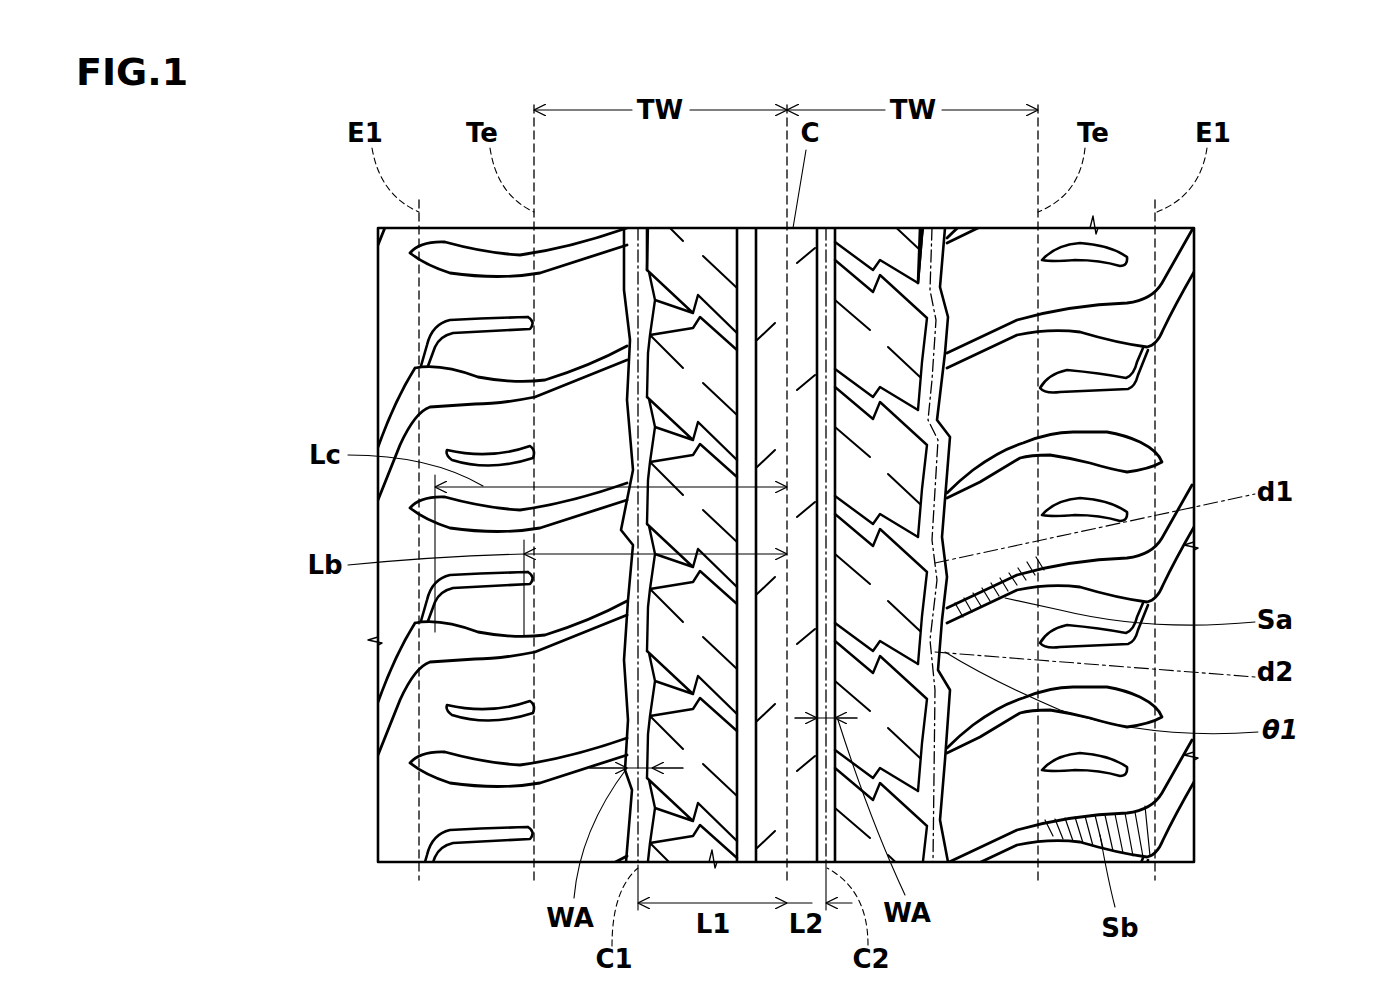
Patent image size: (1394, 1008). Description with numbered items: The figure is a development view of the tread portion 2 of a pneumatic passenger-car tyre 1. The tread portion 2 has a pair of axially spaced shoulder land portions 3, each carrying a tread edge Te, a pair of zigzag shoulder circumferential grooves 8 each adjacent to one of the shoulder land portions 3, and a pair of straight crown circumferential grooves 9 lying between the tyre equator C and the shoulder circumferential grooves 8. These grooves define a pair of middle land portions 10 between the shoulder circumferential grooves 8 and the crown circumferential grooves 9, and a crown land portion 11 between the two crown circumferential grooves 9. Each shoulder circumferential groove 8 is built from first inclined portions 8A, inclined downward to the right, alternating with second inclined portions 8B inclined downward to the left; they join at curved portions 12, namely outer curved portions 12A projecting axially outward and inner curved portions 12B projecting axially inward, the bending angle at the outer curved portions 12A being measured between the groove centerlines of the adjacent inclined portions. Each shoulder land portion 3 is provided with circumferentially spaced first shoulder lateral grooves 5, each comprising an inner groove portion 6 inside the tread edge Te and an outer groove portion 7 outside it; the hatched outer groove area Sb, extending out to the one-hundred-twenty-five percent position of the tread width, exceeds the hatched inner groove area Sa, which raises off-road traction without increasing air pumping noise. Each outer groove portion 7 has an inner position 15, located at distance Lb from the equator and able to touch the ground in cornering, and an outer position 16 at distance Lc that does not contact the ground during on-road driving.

The tyre 1 is at (1343, 178).
The tread portion 2 is at (1258, 213).
The shoulder land portion 3 is at (555, 247).
The first shoulder lateral groove 5 is at (1133, 566).
The inner groove portion 6 is at (987, 352).
The outer groove portion 7 is at (1163, 344).
The shoulder circumferential groove 8 is at (681, 567).
The first inclined portion 8A is at (625, 325).
The second inclined portion 8B is at (935, 645).
The crown circumferential groove 9 is at (747, 250).
The middle land portion 10 is at (691, 250).
The crown land portion 11 is at (805, 247).
The curved portion 12 is at (418, 596).
The outer curved portion 12A is at (623, 619).
The inner curved portion 12B is at (627, 680).
The inner position 15 is at (623, 619).
The outer position 16 is at (433, 538).